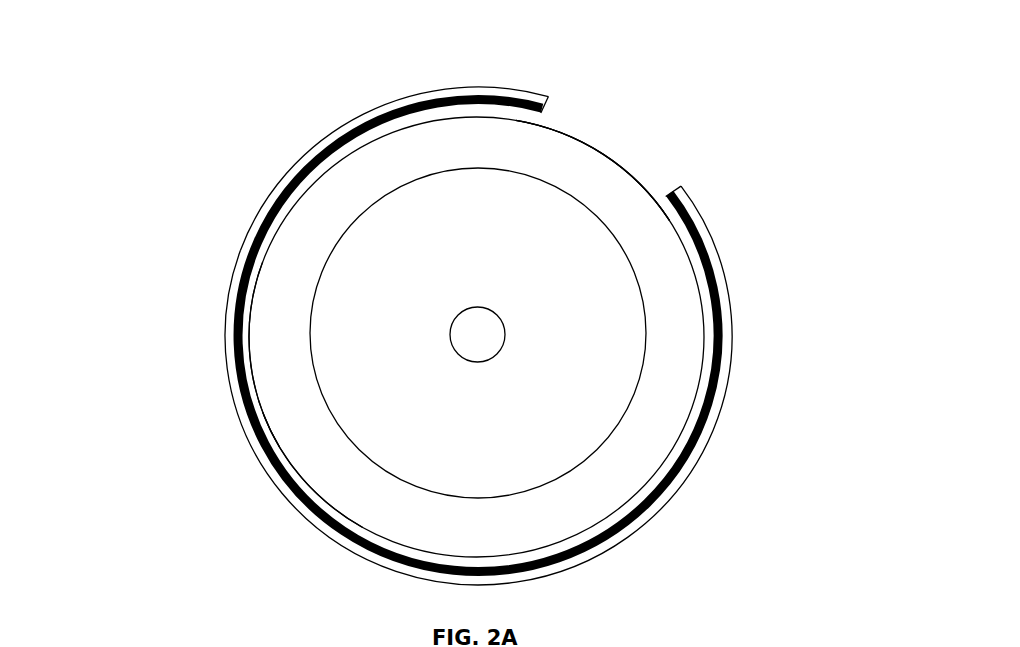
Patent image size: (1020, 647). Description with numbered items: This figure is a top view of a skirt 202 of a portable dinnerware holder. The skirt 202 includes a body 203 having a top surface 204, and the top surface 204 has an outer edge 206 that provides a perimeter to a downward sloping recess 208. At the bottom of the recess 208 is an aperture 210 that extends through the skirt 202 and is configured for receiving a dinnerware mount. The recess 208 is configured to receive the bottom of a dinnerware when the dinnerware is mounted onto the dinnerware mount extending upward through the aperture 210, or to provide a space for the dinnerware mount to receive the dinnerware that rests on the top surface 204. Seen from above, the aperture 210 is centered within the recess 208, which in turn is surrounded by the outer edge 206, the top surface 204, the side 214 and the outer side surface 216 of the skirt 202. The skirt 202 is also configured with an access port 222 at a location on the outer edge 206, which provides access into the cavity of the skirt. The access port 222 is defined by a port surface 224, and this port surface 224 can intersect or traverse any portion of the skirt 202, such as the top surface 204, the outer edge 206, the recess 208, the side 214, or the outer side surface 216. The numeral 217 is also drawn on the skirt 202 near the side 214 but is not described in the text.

The skirt 202 is at (445, 317).
The body 203 is at (272, 286).
The top surface 204 is at (270, 368).
The outer edge 206 is at (305, 433).
The downward sloping recess 208 is at (569, 434).
The aperture 210 is at (490, 335).
The side 214 is at (272, 186).
The outer side surface 216 is at (322, 533).
The band 217 is at (715, 263).
The access port 222 is at (587, 133).
The port surface 224 is at (620, 168).